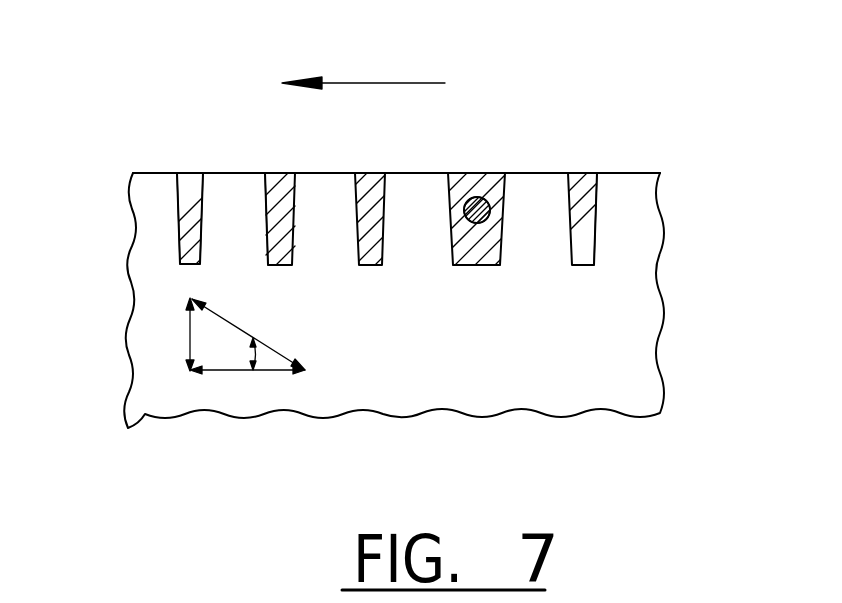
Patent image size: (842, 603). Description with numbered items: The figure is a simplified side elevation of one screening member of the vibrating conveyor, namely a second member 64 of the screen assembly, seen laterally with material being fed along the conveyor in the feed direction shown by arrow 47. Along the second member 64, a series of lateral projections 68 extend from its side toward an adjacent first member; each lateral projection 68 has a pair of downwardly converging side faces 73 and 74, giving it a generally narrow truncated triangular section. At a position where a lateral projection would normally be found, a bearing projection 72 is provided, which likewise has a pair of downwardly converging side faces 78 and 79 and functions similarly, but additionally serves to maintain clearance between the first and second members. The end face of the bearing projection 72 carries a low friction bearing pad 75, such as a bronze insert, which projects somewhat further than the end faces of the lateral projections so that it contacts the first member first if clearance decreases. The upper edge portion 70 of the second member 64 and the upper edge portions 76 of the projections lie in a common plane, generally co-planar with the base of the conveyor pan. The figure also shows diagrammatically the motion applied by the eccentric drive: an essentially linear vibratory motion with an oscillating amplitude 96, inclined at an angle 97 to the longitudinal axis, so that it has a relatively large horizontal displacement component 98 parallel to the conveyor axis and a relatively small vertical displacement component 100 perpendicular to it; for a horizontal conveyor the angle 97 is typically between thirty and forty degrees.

The feed direction arrow 47 is at (377, 83).
The second member 64 is at (593, 392).
The lateral projection 68 is at (268, 228).
The upper edge portion 70 is at (322, 173).
The bearing projection 72 is at (475, 282).
The side face 73 is at (177, 218).
The side face 74 is at (230, 173).
The bearing pad 75 is at (463, 207).
The upper edge portion 76 is at (185, 173).
The side face 78 is at (450, 258).
The side face 79 is at (490, 214).
The oscillating amplitude 96 is at (240, 328).
The angle 97 is at (256, 353).
The horizontal displacement component 98 is at (243, 373).
The vertical displacement component 100 is at (188, 335).